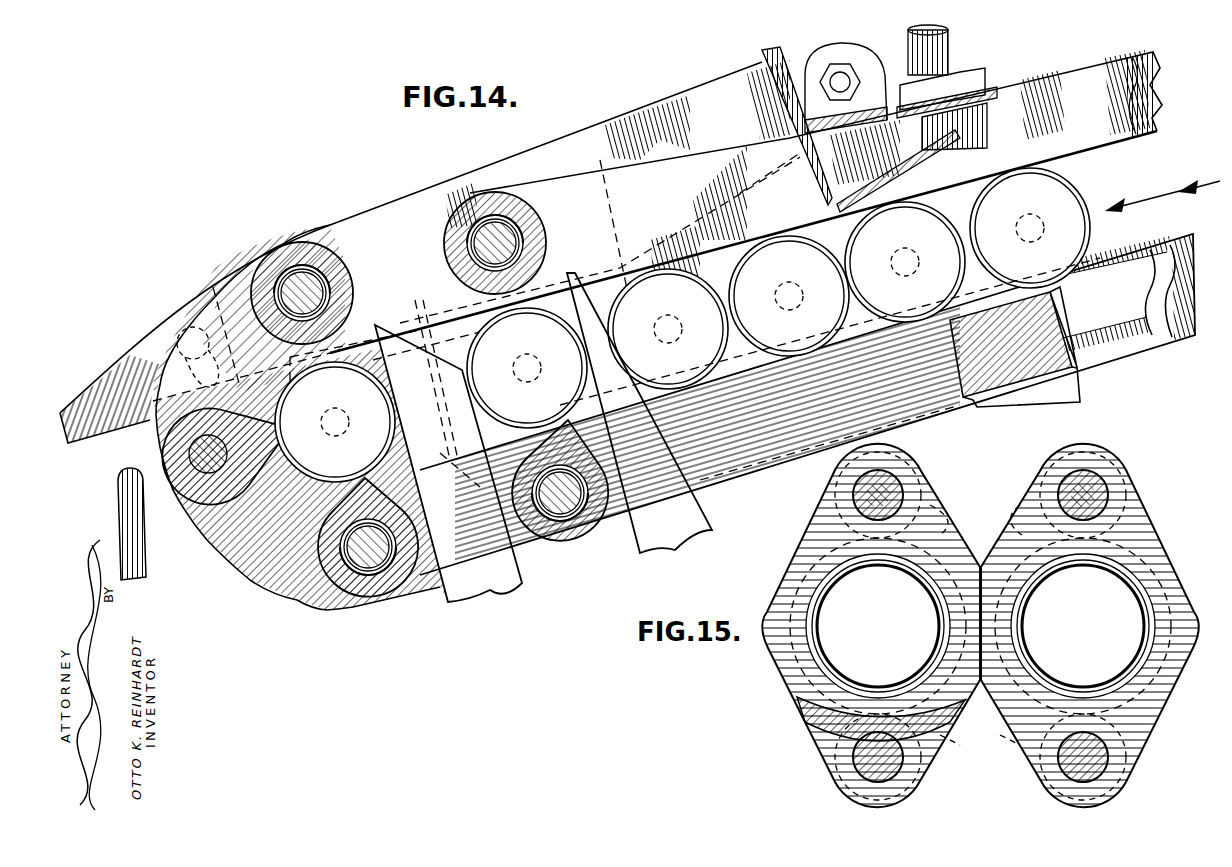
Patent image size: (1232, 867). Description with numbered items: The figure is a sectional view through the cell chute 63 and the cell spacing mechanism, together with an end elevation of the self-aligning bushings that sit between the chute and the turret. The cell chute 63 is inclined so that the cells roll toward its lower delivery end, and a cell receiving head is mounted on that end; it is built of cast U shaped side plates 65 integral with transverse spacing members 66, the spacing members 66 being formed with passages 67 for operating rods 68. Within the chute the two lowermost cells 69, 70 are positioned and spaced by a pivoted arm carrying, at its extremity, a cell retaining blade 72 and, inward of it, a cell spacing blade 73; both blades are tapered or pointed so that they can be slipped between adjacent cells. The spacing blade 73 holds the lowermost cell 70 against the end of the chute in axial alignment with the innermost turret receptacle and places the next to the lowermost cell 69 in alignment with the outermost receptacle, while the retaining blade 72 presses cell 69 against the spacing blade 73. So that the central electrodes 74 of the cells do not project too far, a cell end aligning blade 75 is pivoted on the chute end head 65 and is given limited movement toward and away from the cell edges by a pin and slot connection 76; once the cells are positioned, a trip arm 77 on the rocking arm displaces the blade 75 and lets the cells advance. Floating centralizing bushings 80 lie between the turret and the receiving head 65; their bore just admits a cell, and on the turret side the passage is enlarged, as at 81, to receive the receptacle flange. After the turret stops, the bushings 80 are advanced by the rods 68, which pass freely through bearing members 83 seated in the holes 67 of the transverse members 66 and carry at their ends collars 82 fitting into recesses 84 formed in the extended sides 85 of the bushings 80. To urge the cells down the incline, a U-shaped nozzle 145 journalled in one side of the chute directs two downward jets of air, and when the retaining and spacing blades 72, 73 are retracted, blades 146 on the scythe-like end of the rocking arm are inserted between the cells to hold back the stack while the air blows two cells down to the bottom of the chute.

In FIG. 14, the cell chute 63 is at (1088, 170).
In FIG. 14, the U shaped side plates 65 is at (733, 478).
In FIG. 14, the transverse spacing members 66 is at (298, 258).
In FIG. 14, the passages 67 is at (320, 266).
In FIG. 14, the operating rods 68 is at (298, 300).
In FIG. 15, the operating rods 68 is at (1058, 492).
In FIG. 14, the next to the lowermost cell 69 is at (538, 430).
In FIG. 14, the lowermost cell 70 is at (392, 439).
In FIG. 14, the cell retaining blade 72 is at (678, 537).
In FIG. 14, the cell spacing blade 73 is at (478, 560).
In FIG. 14, the central electrodes 74 is at (348, 415).
In FIG. 14, the cell end aligning blade 75 is at (88, 402).
In FIG. 14, the pin and slot connection 76 is at (145, 357).
In FIG. 14, the trip arm 77 is at (118, 505).
In FIG. 15, the floating centralizing bushings 80 is at (1158, 589).
In FIG. 15, the increased diameter passage 81 is at (1180, 591).
In FIG. 15, the collars 82 is at (852, 468).
In FIG. 14, the bearing members 83 is at (316, 262).
In FIG. 15, the recesses 84 is at (945, 516).
In FIG. 15, the extended sides 85 is at (836, 480).
In FIG. 14, the U-shaped nozzle 145 is at (836, 208).
In FIG. 14, the blades 146 is at (757, 62).